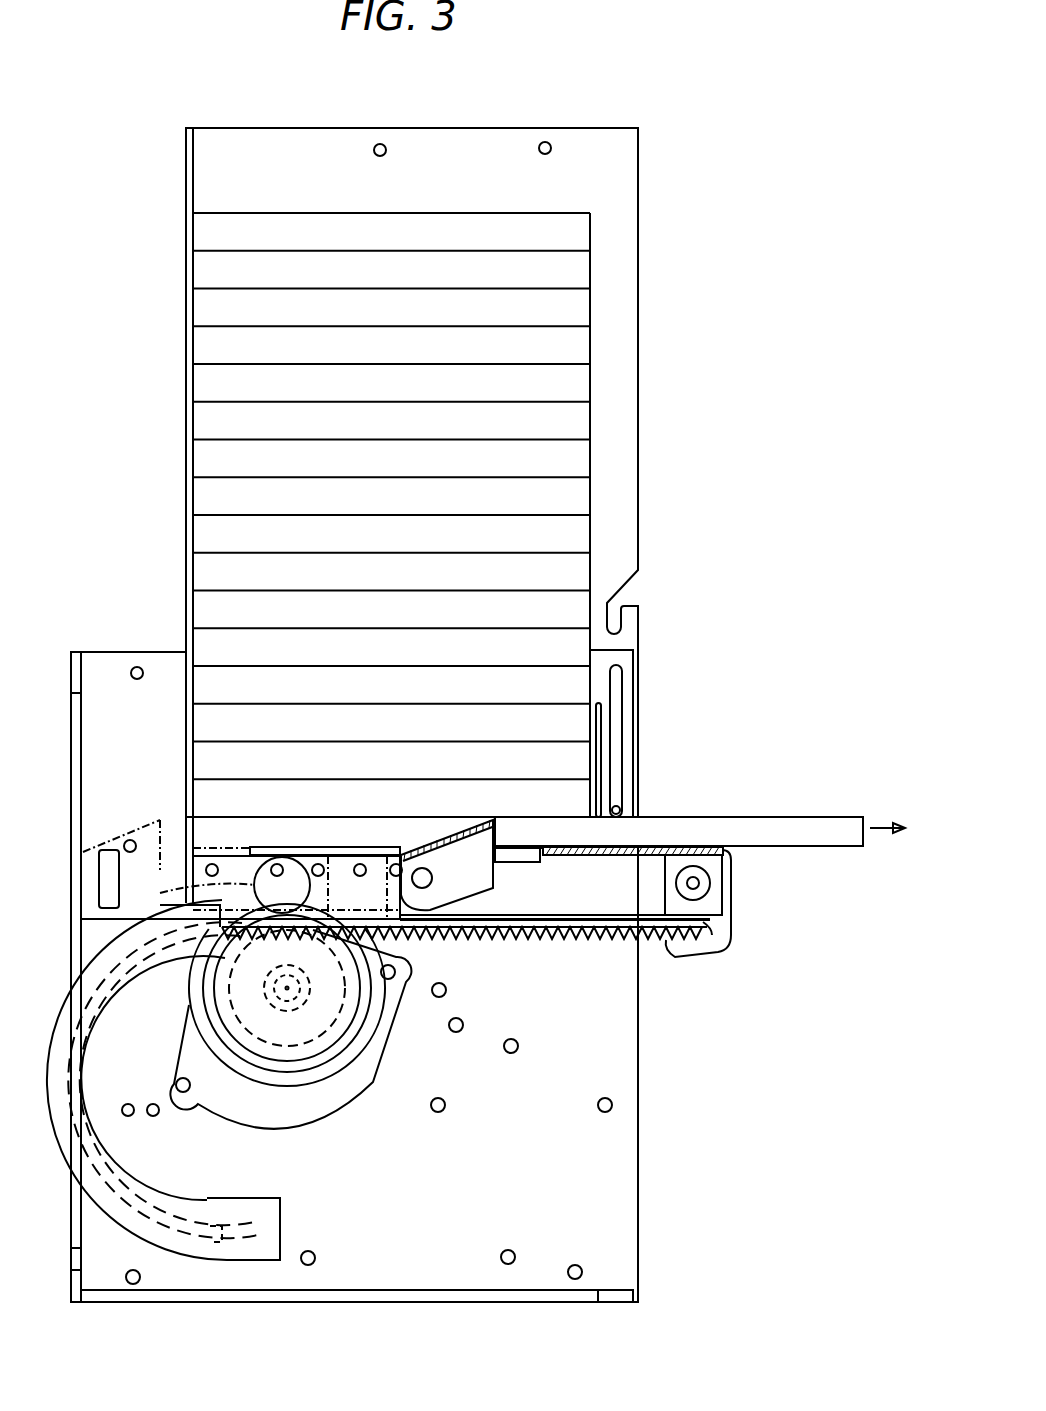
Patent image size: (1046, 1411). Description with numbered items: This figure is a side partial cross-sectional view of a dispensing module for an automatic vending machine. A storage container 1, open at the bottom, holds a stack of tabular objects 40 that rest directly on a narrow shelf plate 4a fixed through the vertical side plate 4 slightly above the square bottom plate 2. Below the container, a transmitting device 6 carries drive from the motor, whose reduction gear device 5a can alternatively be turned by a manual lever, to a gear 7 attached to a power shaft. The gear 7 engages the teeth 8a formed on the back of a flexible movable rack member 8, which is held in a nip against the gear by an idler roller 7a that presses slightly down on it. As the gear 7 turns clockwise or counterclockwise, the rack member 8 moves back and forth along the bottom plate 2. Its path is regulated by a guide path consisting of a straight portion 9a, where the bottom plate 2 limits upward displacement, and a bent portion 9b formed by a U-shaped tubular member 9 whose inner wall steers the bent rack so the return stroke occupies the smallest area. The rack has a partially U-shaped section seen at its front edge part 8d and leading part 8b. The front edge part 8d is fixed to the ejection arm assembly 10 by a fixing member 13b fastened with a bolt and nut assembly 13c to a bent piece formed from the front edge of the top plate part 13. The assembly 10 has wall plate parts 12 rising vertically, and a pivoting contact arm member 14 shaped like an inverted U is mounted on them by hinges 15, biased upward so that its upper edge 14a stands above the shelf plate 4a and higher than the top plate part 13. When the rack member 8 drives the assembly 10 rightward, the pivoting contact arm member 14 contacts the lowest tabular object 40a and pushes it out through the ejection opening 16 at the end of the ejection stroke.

The storage container 1 is at (513, 147).
The tabular objects 40 is at (590, 420).
The tabular object at the bottom of the container 40a is at (830, 820).
The wall plate parts 12 is at (648, 865).
The side plate 4 is at (620, 1195).
The shelf plate 4a is at (268, 848).
The pivoting contact arm member 14 is at (150, 840).
The upper edge 14a is at (490, 818).
The hinges 15 is at (420, 868).
The top plate part 13 is at (675, 855).
The securing or fixing member 13b is at (677, 1000).
The bolt and nut assembly 13c is at (710, 893).
The movable rack member 8 is at (282, 915).
The roller 7a is at (191, 882).
The bottom plate 2 is at (622, 912).
The front edge part 8d is at (712, 924).
The ejection opening 16 is at (757, 808).
The ejection arm assembly 10 is at (757, 871).
The teeth 8a is at (555, 945).
The straight portion 9a is at (508, 945).
The transmitting device 6 is at (460, 958).
The reduction gear device 5a is at (330, 1068).
The gear 7 is at (265, 1028).
The tubular member 9 is at (270, 1228).
The bent portion 9b is at (140, 1210).
The leading part 8b is at (213, 1230).